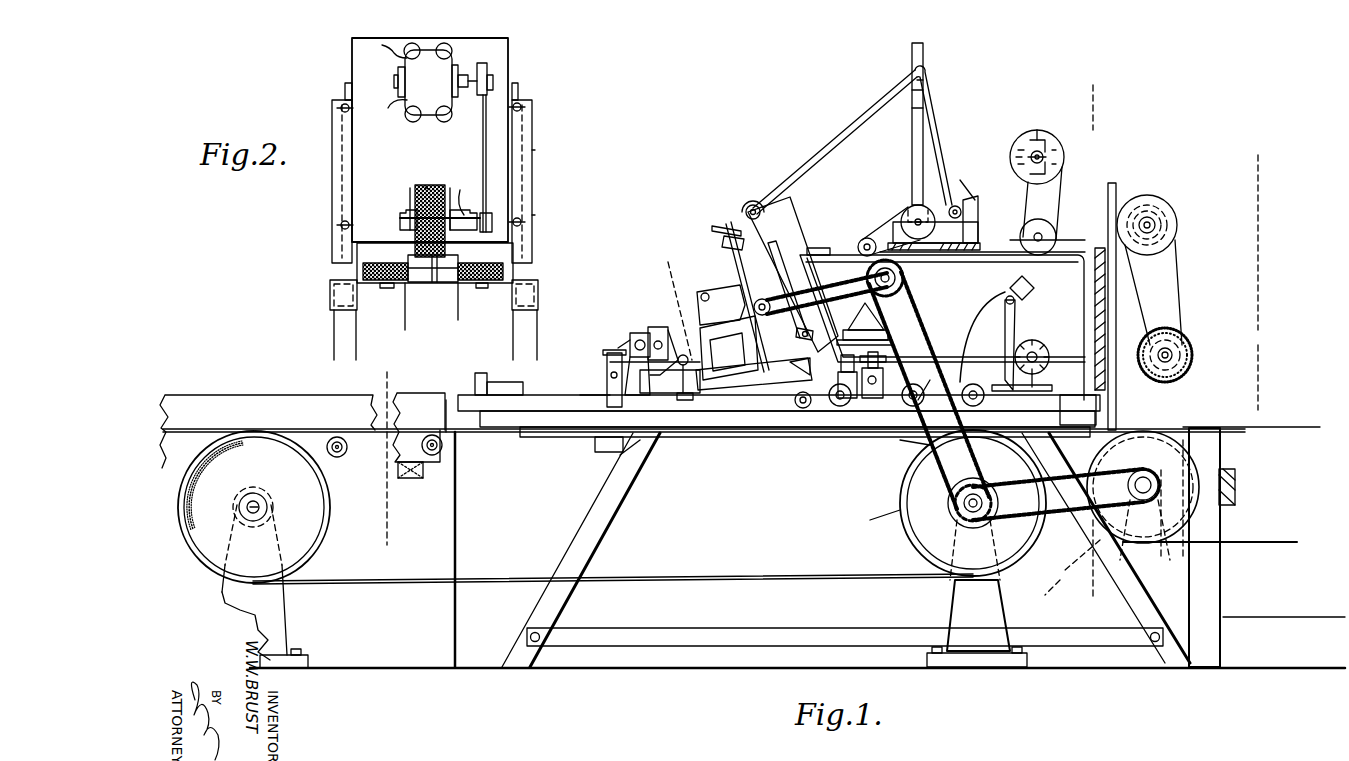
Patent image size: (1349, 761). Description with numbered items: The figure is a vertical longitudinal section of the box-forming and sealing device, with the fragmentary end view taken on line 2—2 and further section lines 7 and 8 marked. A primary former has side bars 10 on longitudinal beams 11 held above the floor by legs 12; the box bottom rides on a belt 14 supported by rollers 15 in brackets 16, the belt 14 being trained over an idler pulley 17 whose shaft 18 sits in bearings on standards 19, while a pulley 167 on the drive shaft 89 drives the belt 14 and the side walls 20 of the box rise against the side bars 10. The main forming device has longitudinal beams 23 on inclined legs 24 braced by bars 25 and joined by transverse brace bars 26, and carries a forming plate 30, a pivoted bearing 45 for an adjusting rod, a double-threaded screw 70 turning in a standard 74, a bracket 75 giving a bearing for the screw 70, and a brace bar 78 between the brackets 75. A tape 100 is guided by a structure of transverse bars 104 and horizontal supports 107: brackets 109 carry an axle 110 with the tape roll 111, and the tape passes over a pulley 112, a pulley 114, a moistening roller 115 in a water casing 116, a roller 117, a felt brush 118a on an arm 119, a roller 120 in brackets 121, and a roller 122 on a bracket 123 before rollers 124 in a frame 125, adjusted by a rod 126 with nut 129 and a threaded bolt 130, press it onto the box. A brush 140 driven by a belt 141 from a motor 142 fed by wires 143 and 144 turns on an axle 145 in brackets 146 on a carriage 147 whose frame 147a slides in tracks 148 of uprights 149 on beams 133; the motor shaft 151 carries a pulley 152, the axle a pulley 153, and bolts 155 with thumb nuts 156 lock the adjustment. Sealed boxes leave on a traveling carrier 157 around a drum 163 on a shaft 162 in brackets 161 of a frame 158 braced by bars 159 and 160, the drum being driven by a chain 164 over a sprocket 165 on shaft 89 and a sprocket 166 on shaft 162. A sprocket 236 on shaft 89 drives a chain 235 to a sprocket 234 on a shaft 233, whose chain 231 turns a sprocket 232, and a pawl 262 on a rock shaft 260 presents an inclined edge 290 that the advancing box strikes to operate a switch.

In FIG. 1, the section line 2— 2 is at (1240, 170).
In FIG. 1, the section line 7- 7 is at (1088, 91).
In FIG. 1, the section line 8- 8 is at (380, 381).
In FIG. 1, the longitudinal side bars 10 is at (264, 396).
In FIG. 1, the longitudinal beams 11 is at (327, 428).
In FIG. 1, the legs 12 is at (446, 549).
In FIG. 1, the traveling carrier or belt 14 is at (512, 582).
In FIG. 1, the rollers 15 is at (348, 452).
In FIG. 1, the brackets 16 is at (662, 264).
In FIG. 1, the idler pulley 17 is at (310, 519).
In FIG. 1, the shaft 18 is at (260, 503).
In FIG. 1, the standards 19 is at (285, 615).
In FIG. 1, the side walls 20 is at (700, 427).
In FIG. 2, the longitudinal beams 23 is at (332, 300).
In FIG. 1, the inclined legs 24 is at (612, 532).
In FIG. 2, the inclined legs 24 is at (356, 346).
In FIG. 1, the bars 25 is at (743, 635).
In FIG. 1, the transverse brace bars 26 is at (606, 455).
In FIG. 1, the forming plate 30 is at (565, 396).
In FIG. 1, the bearing 45 is at (668, 345).
In FIG. 1, the screw 70 is at (1030, 284).
In FIG. 1, the standard 74 is at (1018, 308).
In FIG. 1, the bracket 75 is at (987, 330).
In FIG. 1, the brace bar 78 is at (640, 333).
In FIG. 1, the drive shaft 89 is at (958, 520).
In FIG. 1, the tape 100 is at (835, 148).
In FIG. 1, the transverse bars 104 is at (942, 327).
In FIG. 1, the horizontal supports 107 is at (830, 248).
In FIG. 1, the brackets 109 is at (1028, 224).
In FIG. 1, the axle 110 is at (1062, 157).
In FIG. 1, the roll 111 is at (1038, 135).
In FIG. 1, the pulley 112 is at (1055, 232).
In FIG. 1, the pulley 114 is at (866, 238).
In FIG. 1, the moistening roller 115 is at (911, 209).
In FIG. 1, the casing 116 is at (934, 236).
In FIG. 1, the roller 117 is at (952, 205).
In FIG. 1, the felt brush 118a is at (960, 180).
In FIG. 1, the arm 119 is at (980, 210).
In FIG. 1, the roller 120 is at (912, 98).
In FIG. 1, the brackets 121 is at (932, 117).
In FIG. 1, the roller 122 is at (747, 205).
In FIG. 1, the bracket 123 is at (798, 200).
In FIG. 1, the rollers 124 is at (935, 377).
In FIG. 1, the frame 125 is at (905, 449).
In FIG. 1, the rod 126 is at (1098, 418).
In FIG. 1, the nut 129 is at (870, 405).
In FIG. 1, the threaded bolt 130 is at (1063, 350).
In FIG. 1, the longitudinal beams 133 is at (1096, 410).
In FIG. 1, the brush 140 is at (1195, 352).
In FIG. 2, the brush 140 is at (414, 200).
In FIG. 1, the belt 141 is at (1170, 290).
In FIG. 2, the belt 141 is at (484, 125).
In FIG. 1, the motor 142 is at (1178, 236).
In FIG. 2, the motor 142 is at (430, 60).
In FIG. 2, the wire 143 is at (390, 60).
In FIG. 2, the wire 144 is at (396, 107).
In FIG. 2, the axle 145 is at (430, 187).
In FIG. 2, the brackets 146 is at (402, 224).
In FIG. 2, the carriage 147 is at (360, 58).
In FIG. 2, the frame 147a is at (520, 92).
In FIG. 2, the tracks 148 is at (535, 160).
In FIG. 2, the uprights 149 is at (535, 217).
In FIG. 2, the motor shaft 151 is at (482, 63).
In FIG. 2, the pulley 152 is at (495, 72).
In FIG. 2, the pulley 153 is at (485, 212).
In FIG. 2, the threaded bolts 155 is at (340, 112).
In FIG. 2, the thumb nuts 156 is at (524, 108).
In FIG. 1, the traveling carrier 157 is at (1235, 427).
In FIG. 1, the frame 158 is at (1225, 532).
In FIG. 1, the brace bar 159 is at (1238, 478).
In FIG. 1, the brace bar 160 is at (1290, 610).
In FIG. 1, the brackets 161 is at (1190, 565).
In FIG. 1, the shaft 162 is at (1128, 485).
In FIG. 1, the drum 163 is at (1081, 555).
In FIG. 1, the chain 164 is at (1041, 581).
In FIG. 1, the sprocket 165 is at (1066, 494).
In FIG. 1, the sprocket 166 is at (1140, 470).
In FIG. 1, the pulley 167 is at (864, 515).
In FIG. 1, the chain 231 is at (820, 294).
In FIG. 1, the sprocket 232 is at (735, 282).
In FIG. 1, the shaft 233 is at (898, 278).
In FIG. 1, the sprocket 234 is at (900, 290).
In FIG. 1, the chain 235 is at (925, 380).
In FIG. 1, the sprocket 236 is at (970, 485).
In FIG. 1, the rock shaft 260 is at (612, 345).
In FIG. 1, the pawl 262 is at (599, 391).
In FIG. 1, the inclined edge 290 is at (592, 445).